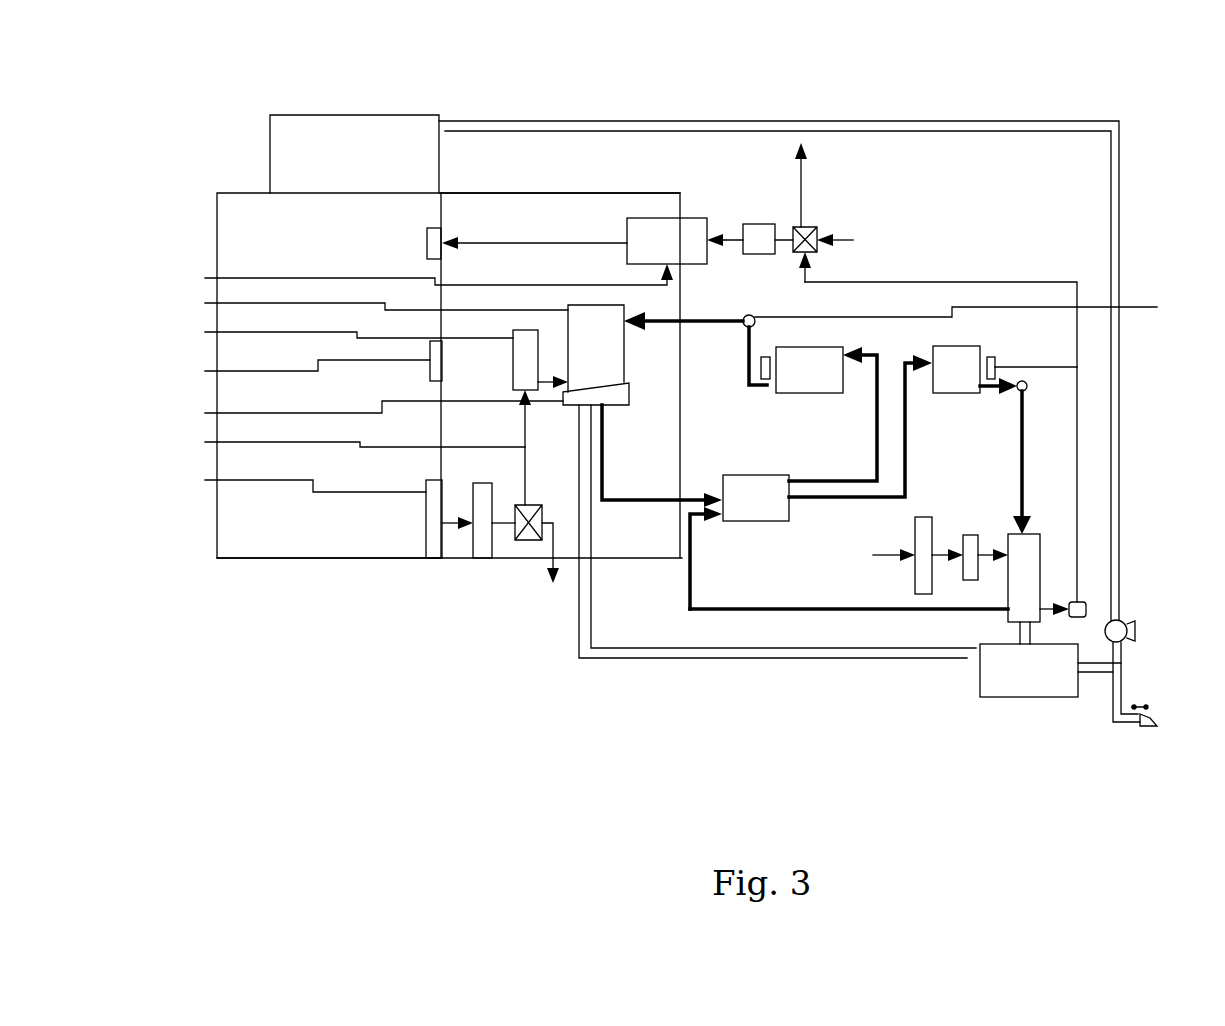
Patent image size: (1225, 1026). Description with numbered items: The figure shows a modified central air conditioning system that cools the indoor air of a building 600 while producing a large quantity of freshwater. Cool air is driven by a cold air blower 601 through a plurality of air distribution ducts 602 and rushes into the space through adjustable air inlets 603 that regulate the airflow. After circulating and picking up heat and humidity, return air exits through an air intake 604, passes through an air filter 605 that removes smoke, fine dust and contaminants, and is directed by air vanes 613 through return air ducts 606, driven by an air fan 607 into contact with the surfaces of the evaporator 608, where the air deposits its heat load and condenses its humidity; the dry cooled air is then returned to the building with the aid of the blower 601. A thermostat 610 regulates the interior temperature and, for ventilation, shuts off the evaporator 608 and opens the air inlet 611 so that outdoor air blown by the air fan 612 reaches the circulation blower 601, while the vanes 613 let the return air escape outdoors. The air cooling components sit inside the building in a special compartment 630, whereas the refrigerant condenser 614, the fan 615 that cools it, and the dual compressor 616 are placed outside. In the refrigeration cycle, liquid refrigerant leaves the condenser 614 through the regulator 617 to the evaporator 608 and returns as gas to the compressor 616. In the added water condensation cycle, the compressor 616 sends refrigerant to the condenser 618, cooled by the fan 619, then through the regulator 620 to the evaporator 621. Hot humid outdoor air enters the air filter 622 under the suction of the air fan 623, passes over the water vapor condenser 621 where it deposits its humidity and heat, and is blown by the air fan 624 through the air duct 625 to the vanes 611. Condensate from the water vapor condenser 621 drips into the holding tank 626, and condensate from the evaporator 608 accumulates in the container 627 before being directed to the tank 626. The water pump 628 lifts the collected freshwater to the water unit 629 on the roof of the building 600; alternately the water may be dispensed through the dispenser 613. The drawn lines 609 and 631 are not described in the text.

The building 600 is at (228, 222).
The cold air blower 601 is at (643, 218).
The air distribution ducts 602 is at (555, 243).
The air inlets 603 is at (432, 228).
The air intake 604 is at (322, 513).
The air filter 605 is at (485, 558).
The return air ducts 606 is at (348, 438).
The air fan 607 is at (370, 413).
The evaporator 608 is at (370, 308).
The signal line 609 is at (422, 279).
The thermostat 610 is at (307, 361).
The air inlet 611 is at (811, 227).
The air fan 612 is at (752, 224).
The air vanes 613 is at (527, 540).
The refrigerant condenser 614 is at (833, 393).
The fan 615 is at (767, 379).
The dual compressor 616 is at (760, 515).
The regulator 617 is at (911, 323).
The condenser 618 is at (980, 347).
The fan 619 is at (1077, 373).
The regulator 620 is at (1027, 386).
The evaporator 621 is at (1040, 543).
The air filter 622 is at (922, 594).
The air fan 623 is at (972, 580).
The air fan 624 is at (1086, 600).
The air duct 625 is at (995, 282).
The holding tank 626 is at (1035, 697).
The container 627 is at (367, 410).
The water pump 628 is at (1135, 629).
The water unit 629 is at (311, 125).
The special compartment 630 is at (506, 193).
The drain valve 631 is at (1157, 713).